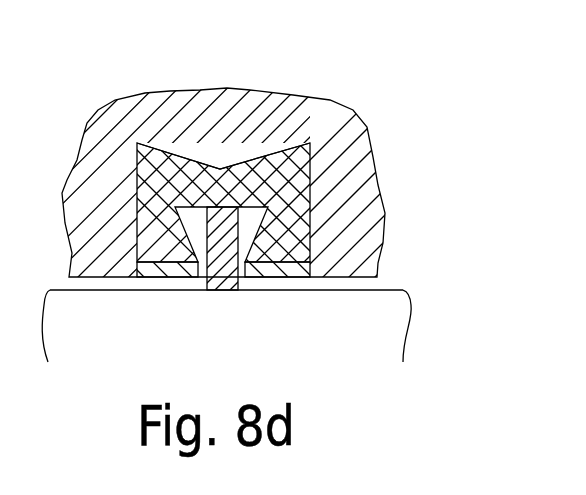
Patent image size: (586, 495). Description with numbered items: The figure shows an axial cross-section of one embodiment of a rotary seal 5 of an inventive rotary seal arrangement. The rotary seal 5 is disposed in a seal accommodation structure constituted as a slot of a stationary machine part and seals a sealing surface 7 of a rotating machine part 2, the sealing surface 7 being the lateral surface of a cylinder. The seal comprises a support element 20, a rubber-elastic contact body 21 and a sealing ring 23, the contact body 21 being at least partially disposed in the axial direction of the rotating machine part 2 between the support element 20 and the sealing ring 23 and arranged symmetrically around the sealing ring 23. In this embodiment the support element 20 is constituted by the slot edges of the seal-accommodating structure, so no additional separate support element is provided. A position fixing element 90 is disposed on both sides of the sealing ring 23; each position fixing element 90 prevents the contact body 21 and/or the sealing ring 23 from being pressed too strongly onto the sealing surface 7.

The rotating machine part 2 is at (205, 351).
The rotary seal 5 is at (221, 156).
The sealing surface 7 is at (398, 272).
The support element 20 is at (125, 198).
The rubber-elastic contact body 21 is at (289, 144).
The sealing ring 23 is at (228, 293).
The position fixing element 90 is at (150, 268).